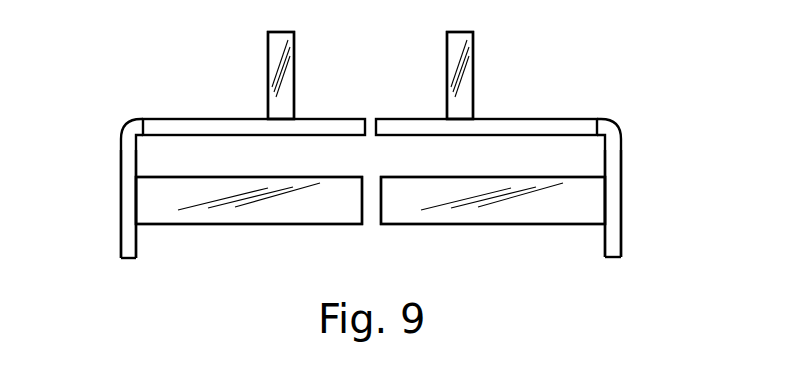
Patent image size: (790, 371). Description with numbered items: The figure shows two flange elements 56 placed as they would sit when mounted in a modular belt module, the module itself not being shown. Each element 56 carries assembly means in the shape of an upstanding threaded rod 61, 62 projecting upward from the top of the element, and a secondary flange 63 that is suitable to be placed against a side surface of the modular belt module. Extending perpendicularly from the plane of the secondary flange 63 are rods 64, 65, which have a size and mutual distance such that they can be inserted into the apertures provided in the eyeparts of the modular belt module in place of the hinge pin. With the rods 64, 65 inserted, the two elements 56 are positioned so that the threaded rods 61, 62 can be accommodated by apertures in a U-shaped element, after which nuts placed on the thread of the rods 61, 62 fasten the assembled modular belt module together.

The element 56 is at (152, 114).
The upstanding threaded rod 61 is at (267, 70).
The upstanding threaded rod 62 is at (370, 75).
The secondary flange 63 is at (128, 204).
The rod 64 is at (245, 210).
The rod 65 is at (370, 200).